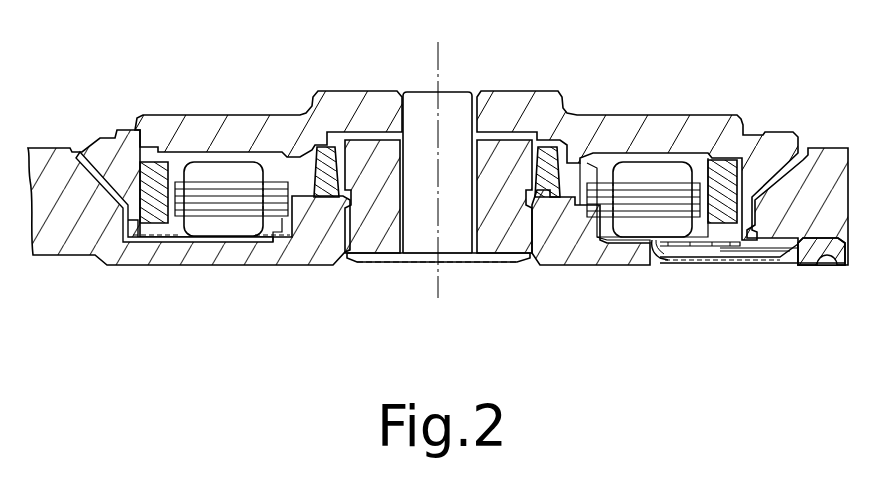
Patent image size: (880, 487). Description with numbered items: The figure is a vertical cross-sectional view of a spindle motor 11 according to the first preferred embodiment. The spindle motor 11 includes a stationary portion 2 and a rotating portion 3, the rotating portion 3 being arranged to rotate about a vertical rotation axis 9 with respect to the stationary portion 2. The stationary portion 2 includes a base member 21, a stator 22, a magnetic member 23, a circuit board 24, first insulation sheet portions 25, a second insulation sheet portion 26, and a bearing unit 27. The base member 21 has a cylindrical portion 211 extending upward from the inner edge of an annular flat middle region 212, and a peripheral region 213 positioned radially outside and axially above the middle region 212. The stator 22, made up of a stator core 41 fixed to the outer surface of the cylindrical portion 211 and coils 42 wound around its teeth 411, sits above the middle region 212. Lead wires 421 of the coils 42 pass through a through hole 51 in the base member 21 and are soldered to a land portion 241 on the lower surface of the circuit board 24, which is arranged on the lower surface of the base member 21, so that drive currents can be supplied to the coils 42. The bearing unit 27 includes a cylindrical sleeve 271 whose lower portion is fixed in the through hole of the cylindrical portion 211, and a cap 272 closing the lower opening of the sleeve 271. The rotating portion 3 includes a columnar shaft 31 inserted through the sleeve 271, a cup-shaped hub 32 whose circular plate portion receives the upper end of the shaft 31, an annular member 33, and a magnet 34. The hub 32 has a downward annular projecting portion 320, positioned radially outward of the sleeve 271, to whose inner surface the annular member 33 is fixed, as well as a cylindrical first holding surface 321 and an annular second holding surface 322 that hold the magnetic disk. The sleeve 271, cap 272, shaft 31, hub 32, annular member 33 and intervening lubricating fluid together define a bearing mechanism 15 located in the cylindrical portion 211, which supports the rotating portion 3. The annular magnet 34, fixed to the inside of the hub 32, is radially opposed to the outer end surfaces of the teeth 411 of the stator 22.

The stationary portion 2 is at (62, 272).
The rotating portion 3 is at (481, 136).
The rotation axis 9 is at (435, 50).
The spindle motor 11 is at (207, 78).
The bearing mechanism 15 is at (475, 272).
The base member 21 is at (237, 272).
The stator 22 is at (444, 144).
The magnetic member 23 is at (728, 246).
The circuit board 24 is at (832, 265).
The first insulation sheet portions 25 is at (695, 263).
The second insulation sheet portion 26 is at (632, 250).
The bearing unit 27 is at (438, 243).
The shaft 31 is at (455, 108).
The hub 32 is at (345, 105).
The annular member 33 is at (318, 165).
The magnet 34 is at (718, 165).
The stator core 41 is at (603, 168).
The coils 42 is at (645, 165).
The through hole 51 is at (658, 258).
The cylindrical portion 211 is at (323, 230).
The middle region 212 is at (165, 258).
The peripheral region 213 is at (48, 190).
The land portion 241 is at (820, 262).
The sleeve 271 is at (377, 227).
The cap 272 is at (423, 260).
The annular projecting portion 320 is at (268, 128).
The first holding surface 321 is at (741, 124).
The second holding surface 322 is at (778, 134).
The teeth 411 is at (672, 200).
The lead wires 421 is at (782, 257).